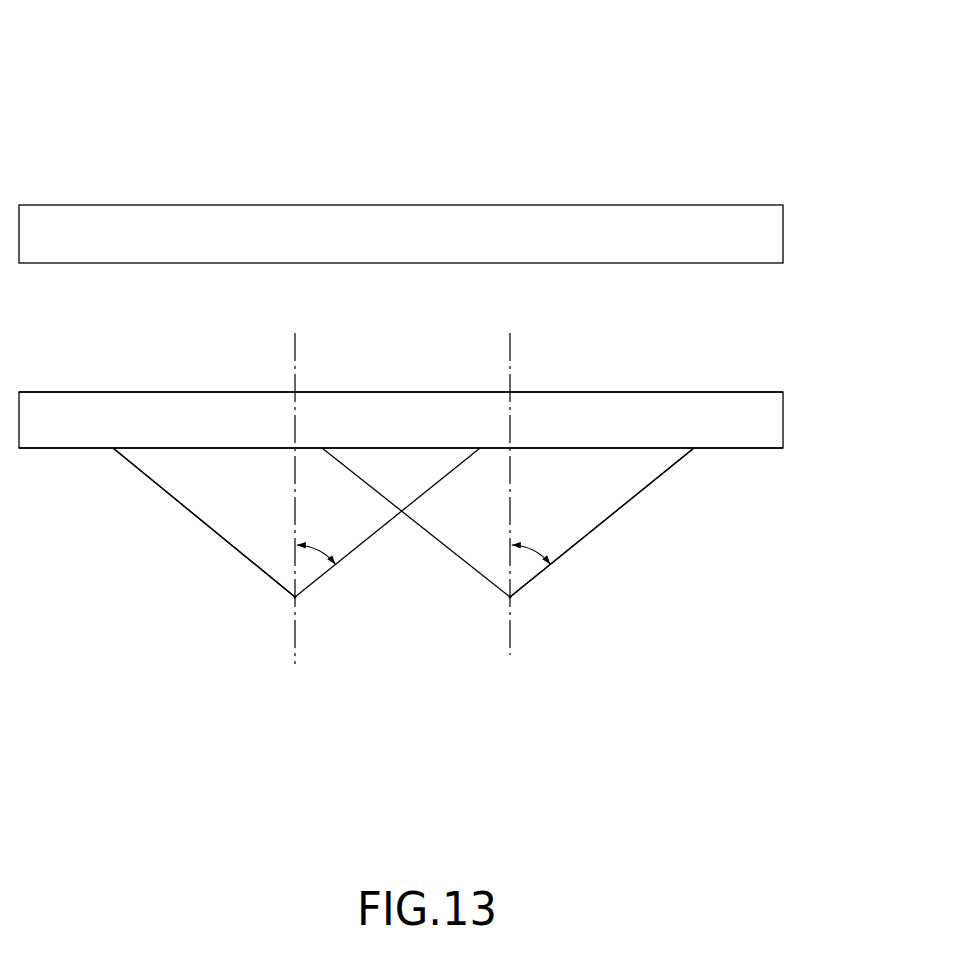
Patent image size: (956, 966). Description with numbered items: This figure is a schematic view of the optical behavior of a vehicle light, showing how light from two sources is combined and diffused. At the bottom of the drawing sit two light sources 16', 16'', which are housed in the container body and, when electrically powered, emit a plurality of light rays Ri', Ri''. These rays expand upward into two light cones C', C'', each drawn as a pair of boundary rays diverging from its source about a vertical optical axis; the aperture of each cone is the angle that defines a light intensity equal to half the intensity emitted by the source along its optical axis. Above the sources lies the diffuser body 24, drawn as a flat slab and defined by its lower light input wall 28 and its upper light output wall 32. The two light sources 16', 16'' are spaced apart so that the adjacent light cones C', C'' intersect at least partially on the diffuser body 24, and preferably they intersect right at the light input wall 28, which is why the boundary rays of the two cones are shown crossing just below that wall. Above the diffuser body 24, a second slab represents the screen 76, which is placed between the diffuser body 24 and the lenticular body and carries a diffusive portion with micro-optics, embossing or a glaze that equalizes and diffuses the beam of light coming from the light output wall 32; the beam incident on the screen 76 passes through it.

The screen 76 is at (620, 238).
The diffuser body 24 is at (718, 418).
The light output wall 32 is at (628, 382).
The light input wall 28 is at (749, 454).
The light source 16' is at (250, 541).
The light source 16'' is at (570, 554).
The light cone C' is at (274, 522).
The light cone C'' is at (526, 522).
The light rays Ri' is at (244, 556).
The light rays Ri'' is at (561, 590).